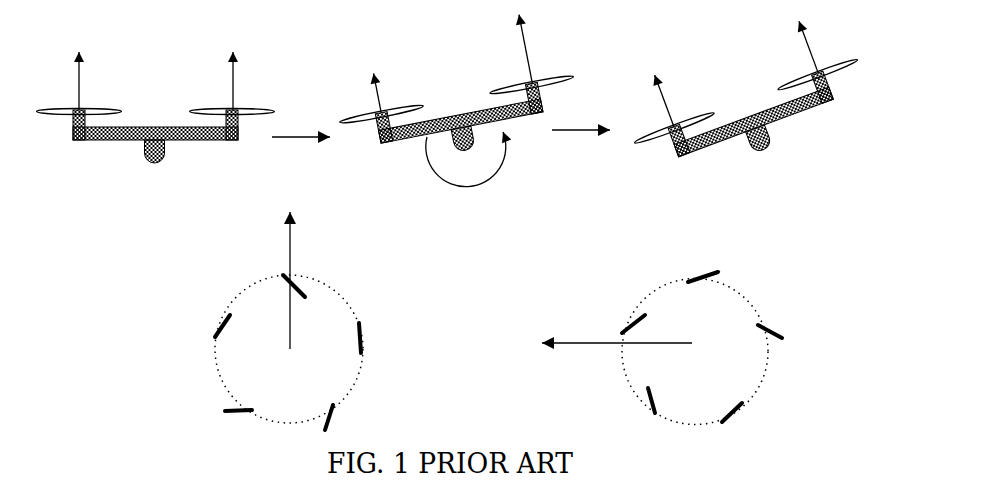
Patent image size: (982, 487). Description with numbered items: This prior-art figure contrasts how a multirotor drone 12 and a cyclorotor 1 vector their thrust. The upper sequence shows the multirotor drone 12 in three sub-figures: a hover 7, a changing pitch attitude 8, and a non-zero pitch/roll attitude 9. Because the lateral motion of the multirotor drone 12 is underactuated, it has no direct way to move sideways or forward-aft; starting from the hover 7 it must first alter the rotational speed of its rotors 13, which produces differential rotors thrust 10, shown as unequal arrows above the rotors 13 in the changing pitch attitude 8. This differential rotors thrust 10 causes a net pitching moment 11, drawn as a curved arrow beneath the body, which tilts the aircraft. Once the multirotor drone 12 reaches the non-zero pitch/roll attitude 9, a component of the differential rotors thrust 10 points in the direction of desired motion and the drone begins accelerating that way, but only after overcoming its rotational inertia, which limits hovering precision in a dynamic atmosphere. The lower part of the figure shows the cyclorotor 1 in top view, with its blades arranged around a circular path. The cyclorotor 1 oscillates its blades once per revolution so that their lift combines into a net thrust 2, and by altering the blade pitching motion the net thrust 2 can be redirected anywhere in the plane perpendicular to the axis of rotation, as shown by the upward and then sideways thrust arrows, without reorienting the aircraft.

The cyclorotor 1 is at (272, 256).
The net thrust 2 is at (300, 227).
The hover 7 is at (152, 56).
The changing pitch attitude 8 is at (454, 57).
The non-zero pitch/roll attitude 9 is at (742, 57).
The differential rotors thrust 10 is at (237, 63).
The net pitching moment 11 is at (500, 167).
The multirotor drone 12 is at (147, 128).
The rotors 13 is at (62, 109).